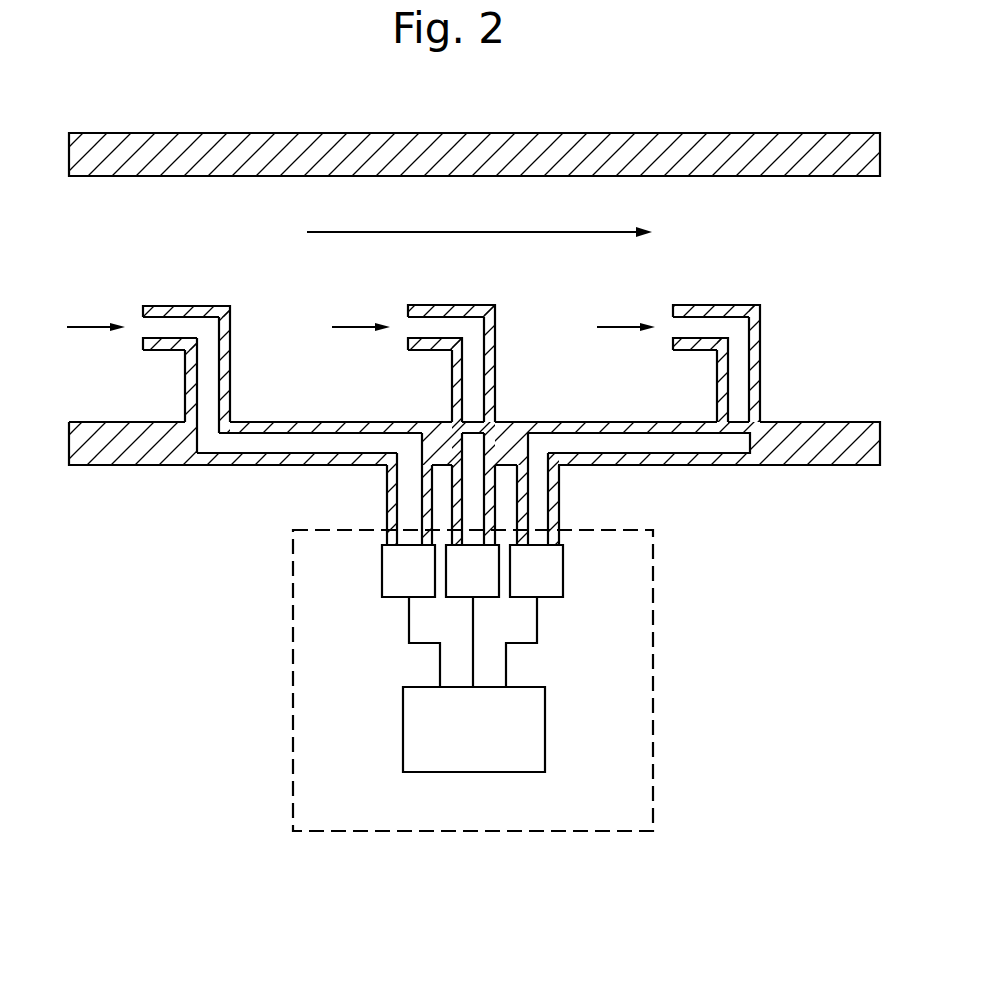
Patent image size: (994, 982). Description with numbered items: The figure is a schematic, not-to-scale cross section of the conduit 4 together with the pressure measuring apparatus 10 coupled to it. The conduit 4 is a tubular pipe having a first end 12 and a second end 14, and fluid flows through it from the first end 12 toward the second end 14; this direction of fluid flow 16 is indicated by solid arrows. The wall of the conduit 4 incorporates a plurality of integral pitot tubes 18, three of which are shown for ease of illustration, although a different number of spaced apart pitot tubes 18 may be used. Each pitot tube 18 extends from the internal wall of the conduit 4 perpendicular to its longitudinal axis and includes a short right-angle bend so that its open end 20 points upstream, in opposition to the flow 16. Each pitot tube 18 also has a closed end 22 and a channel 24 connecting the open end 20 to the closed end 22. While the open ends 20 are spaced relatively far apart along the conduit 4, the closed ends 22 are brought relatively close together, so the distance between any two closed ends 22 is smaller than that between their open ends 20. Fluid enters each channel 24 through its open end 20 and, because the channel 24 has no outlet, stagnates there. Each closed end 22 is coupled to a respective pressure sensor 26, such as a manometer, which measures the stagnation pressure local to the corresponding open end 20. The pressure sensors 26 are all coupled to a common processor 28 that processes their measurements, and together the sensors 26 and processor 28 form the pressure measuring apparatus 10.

The conduit 4 is at (717, 132).
The pressure measuring apparatus 10 is at (653, 707).
The first end 12 is at (90, 224).
The second end 14 is at (860, 233).
The fluid flow direction 16 is at (407, 232).
The pitot tube 18 is at (190, 305).
The open end 20 is at (140, 325).
The closed end 22 is at (465, 532).
The channel 24 is at (197, 436).
The pressure sensor 26 is at (382, 572).
The processor 28 is at (403, 722).